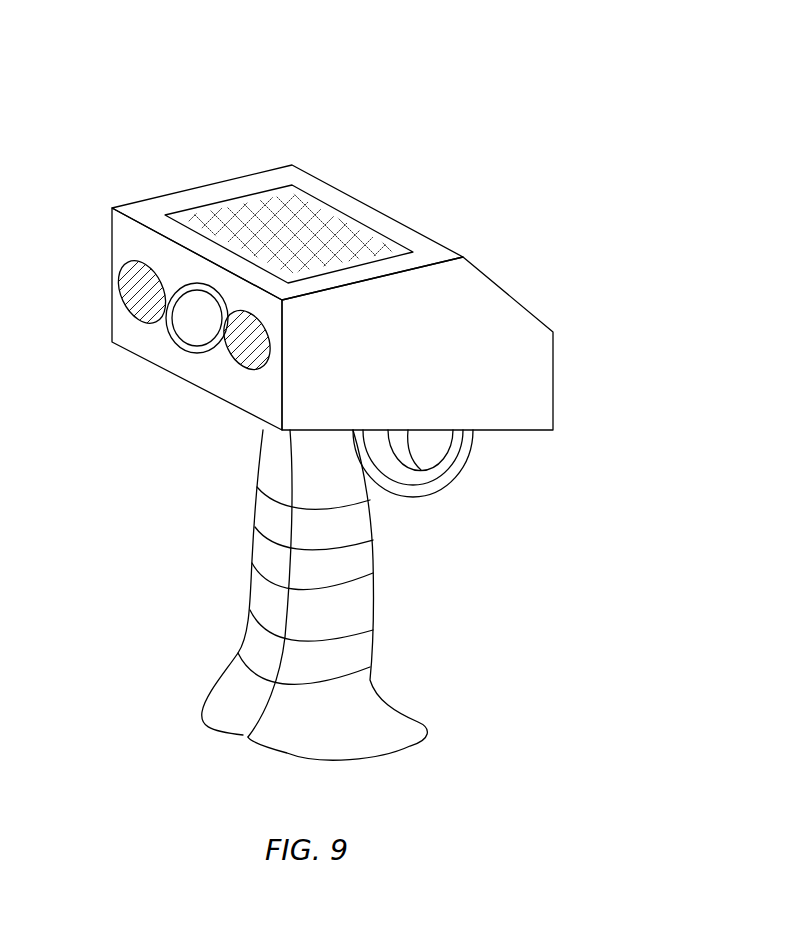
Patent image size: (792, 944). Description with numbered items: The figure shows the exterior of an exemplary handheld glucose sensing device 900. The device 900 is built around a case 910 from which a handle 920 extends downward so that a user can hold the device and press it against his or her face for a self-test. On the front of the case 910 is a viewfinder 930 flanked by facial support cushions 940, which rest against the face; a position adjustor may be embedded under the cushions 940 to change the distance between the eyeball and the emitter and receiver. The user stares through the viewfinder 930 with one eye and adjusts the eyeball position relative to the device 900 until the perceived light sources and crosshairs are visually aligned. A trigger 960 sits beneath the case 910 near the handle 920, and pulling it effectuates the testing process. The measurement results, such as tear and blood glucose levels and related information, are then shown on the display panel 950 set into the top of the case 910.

The glucose sensing device 900 is at (735, 48).
The case 910 is at (482, 362).
The handle 920 is at (363, 628).
The viewfinder 930 is at (187, 315).
The facial support cushions 940 is at (230, 338).
The display panel 950 is at (298, 220).
The trigger 960 is at (422, 470).